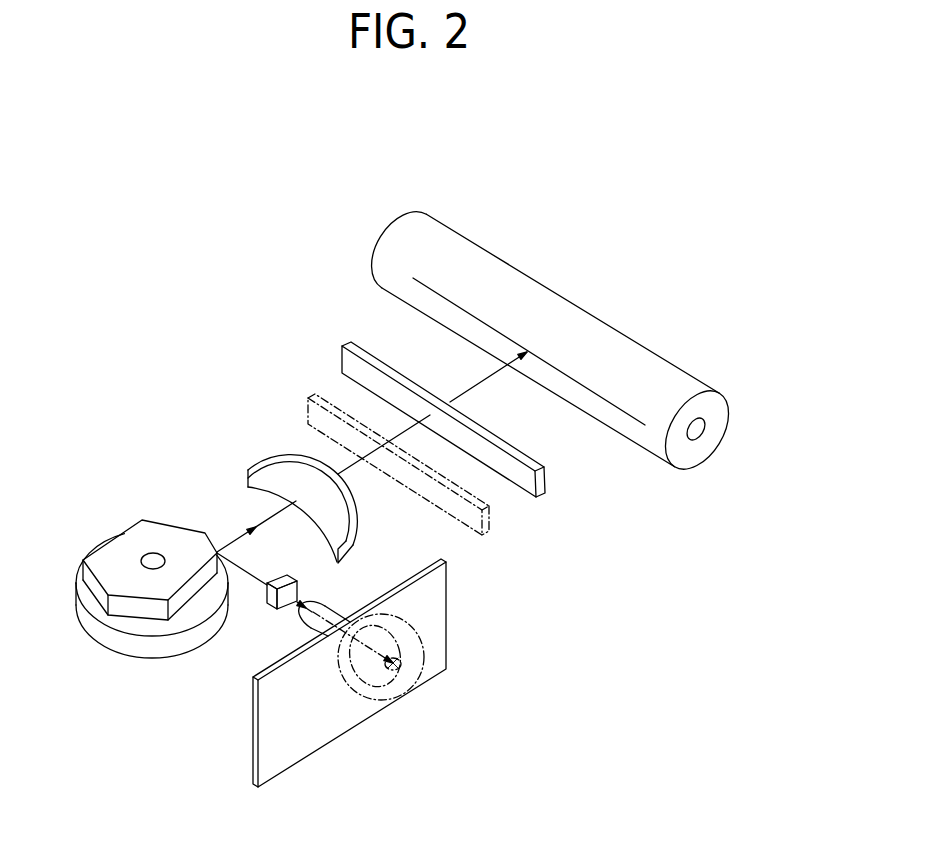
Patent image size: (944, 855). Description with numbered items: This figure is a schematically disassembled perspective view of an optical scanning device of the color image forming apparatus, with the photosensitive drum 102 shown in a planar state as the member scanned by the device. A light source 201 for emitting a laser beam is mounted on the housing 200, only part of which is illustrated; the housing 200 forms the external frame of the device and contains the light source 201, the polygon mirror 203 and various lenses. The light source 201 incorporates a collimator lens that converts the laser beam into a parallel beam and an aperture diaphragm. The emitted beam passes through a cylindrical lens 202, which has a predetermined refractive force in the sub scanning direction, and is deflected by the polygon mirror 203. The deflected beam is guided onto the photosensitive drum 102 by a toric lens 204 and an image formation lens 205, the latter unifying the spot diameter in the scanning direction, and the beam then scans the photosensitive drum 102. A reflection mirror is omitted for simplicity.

The photosensitive drum 102 is at (462, 240).
The housing 200 is at (298, 743).
The light source 201 is at (422, 633).
The cylindrical lens 202 is at (264, 592).
The polygon mirror 203 is at (125, 543).
The toric lens 204 is at (275, 462).
The image formation lens 205 is at (527, 498).